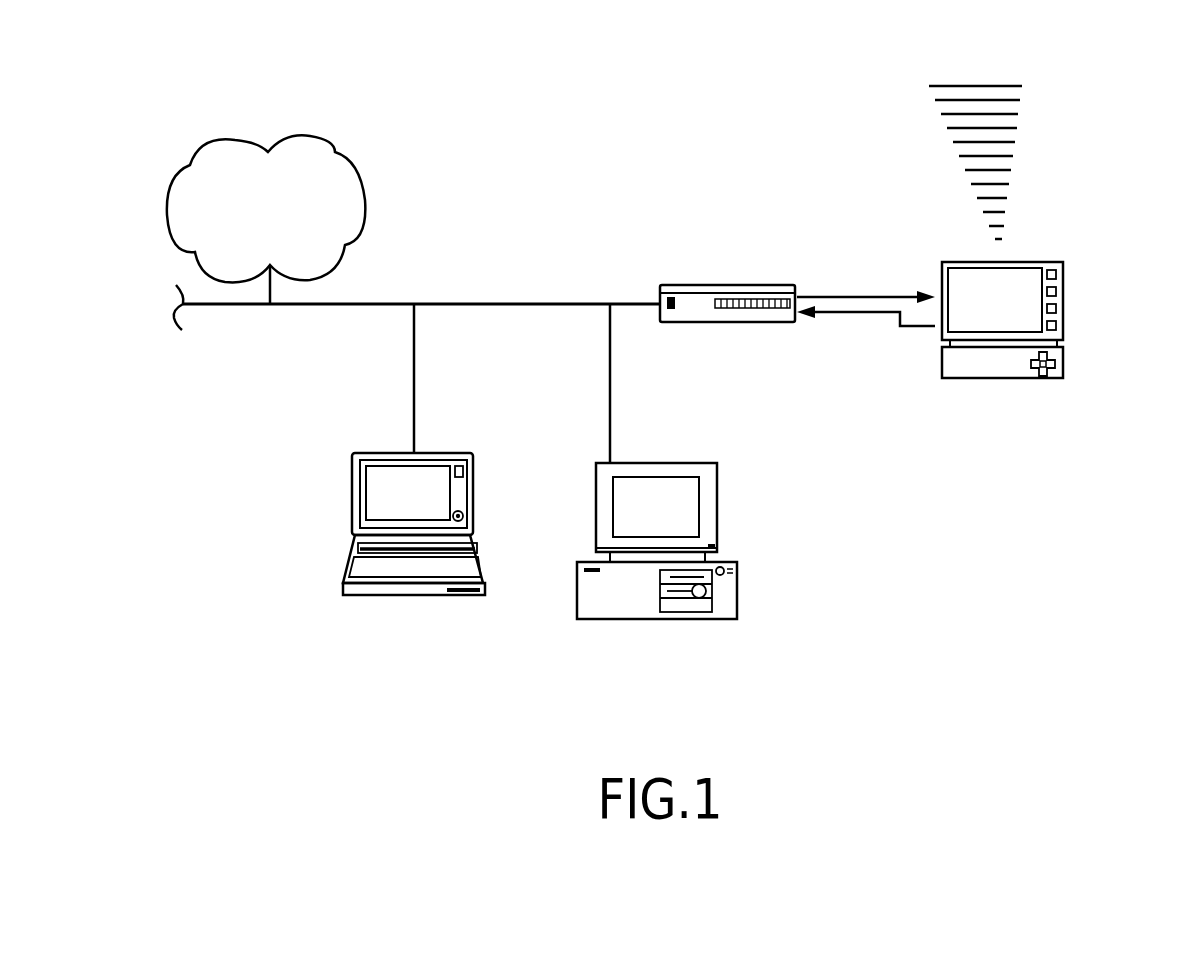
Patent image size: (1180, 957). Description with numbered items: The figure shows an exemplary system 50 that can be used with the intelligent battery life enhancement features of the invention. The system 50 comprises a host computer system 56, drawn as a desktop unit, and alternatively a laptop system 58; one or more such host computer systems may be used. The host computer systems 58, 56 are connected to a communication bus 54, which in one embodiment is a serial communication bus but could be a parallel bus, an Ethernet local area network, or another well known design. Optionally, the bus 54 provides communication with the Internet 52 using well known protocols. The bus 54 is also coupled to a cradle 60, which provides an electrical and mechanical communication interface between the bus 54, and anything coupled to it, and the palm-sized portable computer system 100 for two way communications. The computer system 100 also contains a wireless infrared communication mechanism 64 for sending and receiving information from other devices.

The system 50 is at (210, 23).
The Internet 52 is at (365, 182).
The communication bus 54 is at (498, 303).
The host computer system 56 is at (718, 529).
The laptop system 58 is at (443, 453).
The cradle 60 is at (742, 285).
The wireless infrared communication mechanism 64 is at (1019, 130).
The portable computer system 100 is at (1065, 298).